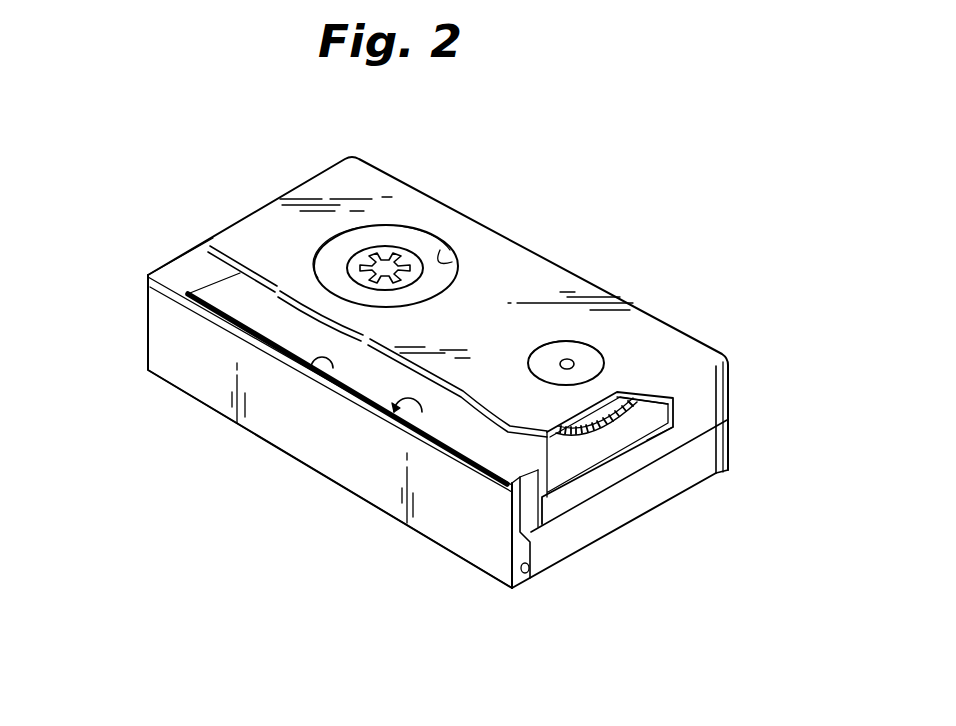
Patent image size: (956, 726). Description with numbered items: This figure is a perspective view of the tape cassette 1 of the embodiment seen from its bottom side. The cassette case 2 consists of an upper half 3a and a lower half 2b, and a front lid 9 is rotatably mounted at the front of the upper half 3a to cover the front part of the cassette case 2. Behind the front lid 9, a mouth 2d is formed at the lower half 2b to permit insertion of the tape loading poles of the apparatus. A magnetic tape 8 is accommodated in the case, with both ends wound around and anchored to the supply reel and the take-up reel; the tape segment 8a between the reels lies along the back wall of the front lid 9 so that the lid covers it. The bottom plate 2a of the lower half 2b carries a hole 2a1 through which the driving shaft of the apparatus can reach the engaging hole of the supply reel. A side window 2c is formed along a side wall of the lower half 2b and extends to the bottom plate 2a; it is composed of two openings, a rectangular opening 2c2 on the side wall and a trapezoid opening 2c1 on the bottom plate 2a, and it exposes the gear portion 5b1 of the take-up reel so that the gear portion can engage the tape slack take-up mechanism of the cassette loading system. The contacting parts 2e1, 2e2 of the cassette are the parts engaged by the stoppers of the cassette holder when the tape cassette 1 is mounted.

The tape cassette 1 is at (258, 136).
The cassette case 2 is at (737, 390).
The bottom plate 2a is at (673, 343).
The hole 2a1 is at (458, 256).
The lower half 2b is at (697, 415).
The side window 2c is at (590, 436).
The trapezoid opening 2c1 is at (563, 440).
The rectangular opening 2c2 is at (648, 442).
The mouth 2d is at (263, 311).
The contacting part 2e1 is at (243, 307).
The contacting part 2e2 is at (432, 363).
The upper half 3a is at (730, 440).
The gear portion 5b1 is at (613, 410).
The magnetic tape 8 is at (403, 433).
The tape segment 8a is at (327, 380).
The front lid 9 is at (217, 383).